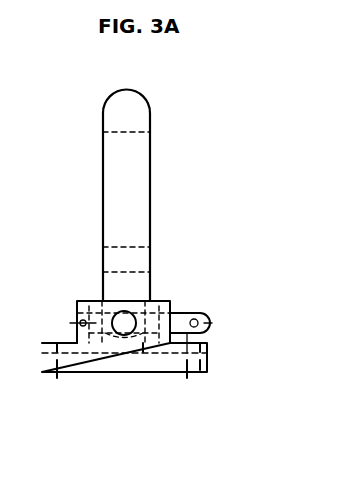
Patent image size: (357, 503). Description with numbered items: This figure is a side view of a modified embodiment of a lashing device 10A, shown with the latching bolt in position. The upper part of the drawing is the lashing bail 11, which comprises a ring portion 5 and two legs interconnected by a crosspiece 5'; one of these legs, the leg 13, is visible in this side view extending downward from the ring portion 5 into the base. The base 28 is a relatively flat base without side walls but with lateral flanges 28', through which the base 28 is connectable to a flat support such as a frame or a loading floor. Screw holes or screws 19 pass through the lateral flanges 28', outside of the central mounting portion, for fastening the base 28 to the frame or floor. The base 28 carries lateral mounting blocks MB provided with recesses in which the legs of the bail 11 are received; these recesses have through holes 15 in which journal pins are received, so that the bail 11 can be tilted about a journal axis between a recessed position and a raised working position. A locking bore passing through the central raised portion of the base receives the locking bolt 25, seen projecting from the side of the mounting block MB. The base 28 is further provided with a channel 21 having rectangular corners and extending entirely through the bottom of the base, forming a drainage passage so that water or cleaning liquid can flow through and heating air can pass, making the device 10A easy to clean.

The ring portion 5 is at (106, 207).
The lashing bail 11 is at (158, 109).
The crosspiece 5' is at (98, 243).
The lashing device 10A is at (173, 243).
The mounting blocks MB is at (85, 301).
The leg 13 is at (142, 287).
The through holes 15 is at (124, 323).
The locking bolt 25 is at (190, 313).
The base 28 is at (162, 339).
The lateral flanges 28' is at (141, 387).
The screws 19 is at (60, 382).
The channel 21 is at (143, 362).